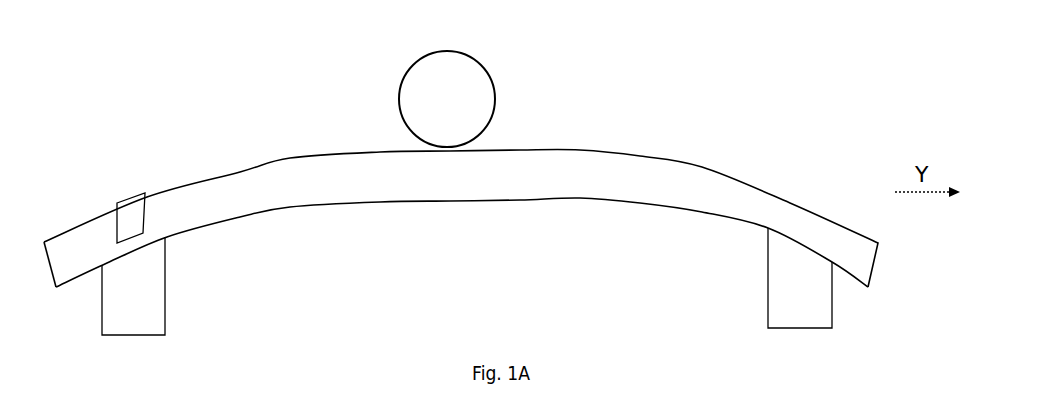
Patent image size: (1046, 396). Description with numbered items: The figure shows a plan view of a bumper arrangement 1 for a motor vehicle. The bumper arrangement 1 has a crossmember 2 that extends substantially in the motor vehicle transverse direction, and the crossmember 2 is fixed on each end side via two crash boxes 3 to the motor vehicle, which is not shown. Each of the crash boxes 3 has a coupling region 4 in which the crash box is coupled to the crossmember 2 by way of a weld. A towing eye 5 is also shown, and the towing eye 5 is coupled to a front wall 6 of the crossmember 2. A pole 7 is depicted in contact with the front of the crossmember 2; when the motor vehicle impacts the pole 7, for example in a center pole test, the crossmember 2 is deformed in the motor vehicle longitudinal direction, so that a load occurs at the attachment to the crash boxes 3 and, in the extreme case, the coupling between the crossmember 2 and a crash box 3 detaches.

The bumper arrangement 1 is at (160, 123).
The crossmember 2 is at (702, 177).
The crash boxes 3 is at (152, 298).
The coupling region 4 is at (788, 233).
The towing eye 5 is at (117, 206).
The front wall 6 is at (287, 158).
The pole 7 is at (477, 88).